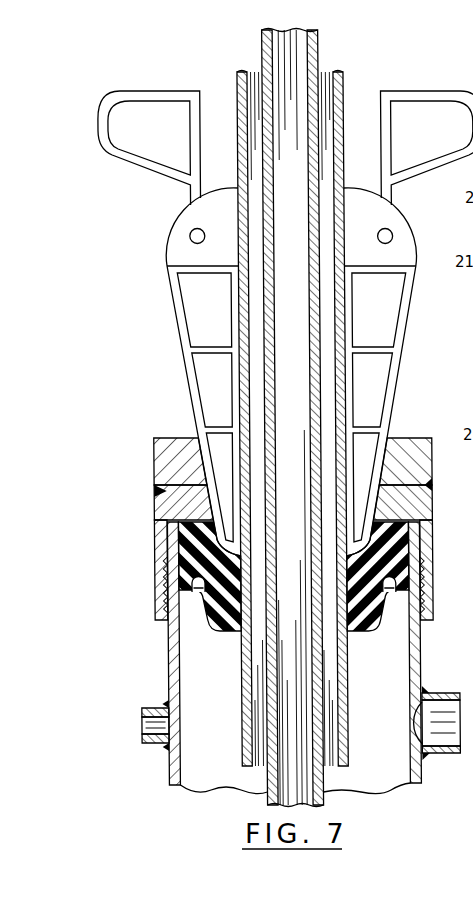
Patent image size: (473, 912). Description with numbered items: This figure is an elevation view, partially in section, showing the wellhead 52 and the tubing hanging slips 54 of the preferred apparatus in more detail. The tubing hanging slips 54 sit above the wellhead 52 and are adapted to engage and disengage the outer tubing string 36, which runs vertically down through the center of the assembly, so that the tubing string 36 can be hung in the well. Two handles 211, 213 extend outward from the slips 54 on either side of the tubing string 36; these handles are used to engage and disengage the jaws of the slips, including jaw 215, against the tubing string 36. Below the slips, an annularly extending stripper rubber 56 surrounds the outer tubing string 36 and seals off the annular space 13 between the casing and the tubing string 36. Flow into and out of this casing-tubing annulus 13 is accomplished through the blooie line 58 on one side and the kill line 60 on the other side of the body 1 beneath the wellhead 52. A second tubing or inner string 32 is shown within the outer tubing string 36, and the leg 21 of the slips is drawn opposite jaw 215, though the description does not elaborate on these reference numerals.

The body housing 1 is at (422, 770).
The annular space 13 is at (230, 689).
The frame leg 21 is at (408, 307).
The inner tube 32 is at (318, 45).
The outer tubing string 36 is at (238, 83).
The wellhead 52 is at (175, 437).
The tubing hanging slips 54 is at (158, 255).
The stripper rubber 56 is at (367, 631).
The blooie line 58 is at (446, 691).
The kill line 60 is at (163, 706).
The handle 211 is at (106, 113).
The handle 213 is at (445, 88).
The jaw 215 is at (175, 312).